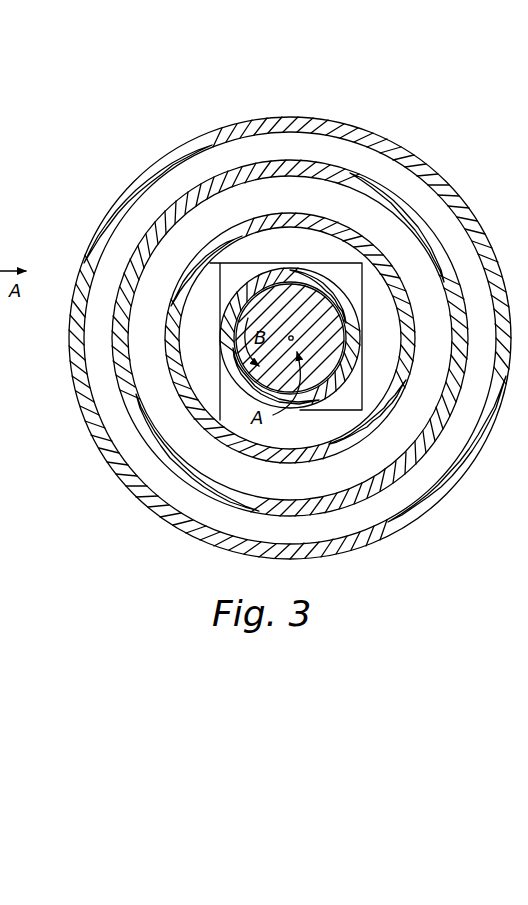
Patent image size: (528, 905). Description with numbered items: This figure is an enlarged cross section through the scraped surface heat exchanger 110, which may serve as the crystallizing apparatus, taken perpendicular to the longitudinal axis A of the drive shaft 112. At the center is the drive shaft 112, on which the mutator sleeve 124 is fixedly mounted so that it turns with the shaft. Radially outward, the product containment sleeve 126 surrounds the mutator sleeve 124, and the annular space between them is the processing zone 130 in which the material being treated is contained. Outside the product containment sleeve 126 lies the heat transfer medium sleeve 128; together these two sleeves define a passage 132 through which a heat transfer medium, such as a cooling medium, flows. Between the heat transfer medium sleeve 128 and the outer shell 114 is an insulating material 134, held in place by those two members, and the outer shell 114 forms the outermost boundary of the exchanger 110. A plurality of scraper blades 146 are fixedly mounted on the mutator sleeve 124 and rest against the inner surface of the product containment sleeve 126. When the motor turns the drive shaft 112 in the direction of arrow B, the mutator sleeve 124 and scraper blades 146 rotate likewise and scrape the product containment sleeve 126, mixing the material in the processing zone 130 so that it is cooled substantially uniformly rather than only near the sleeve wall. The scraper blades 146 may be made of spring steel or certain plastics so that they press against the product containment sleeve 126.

The scraped surface heat exchanger 110 is at (462, 171).
The drive shaft 112 is at (366, 340).
The outer shell 114 is at (207, 140).
The mutator sleeve 124 is at (344, 270).
The product containment sleeve 126 is at (320, 205).
The heat transfer medium sleeve 128 is at (247, 175).
The processing zone 130 is at (318, 247).
The passage 132 is at (272, 190).
The insulating material 134 is at (222, 165).
The scraper blades 146 is at (234, 262).